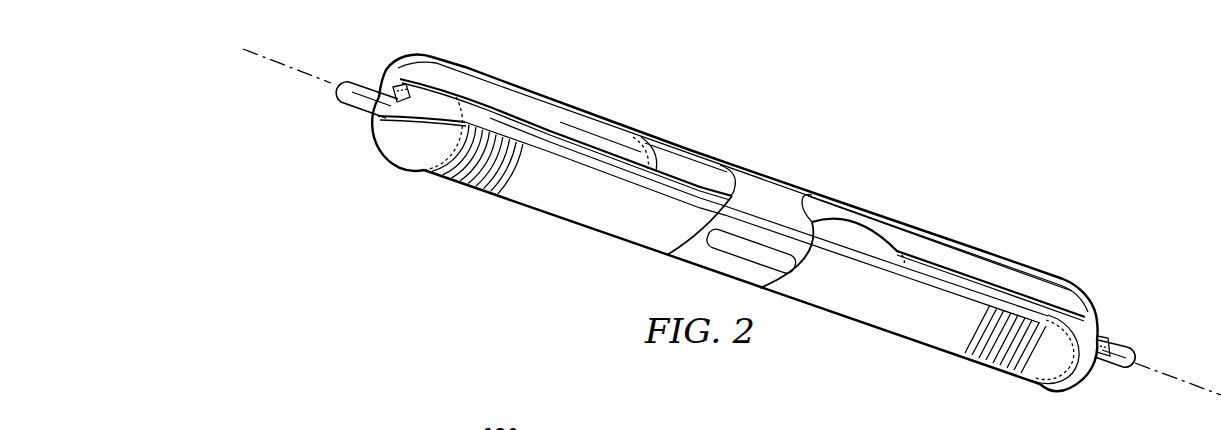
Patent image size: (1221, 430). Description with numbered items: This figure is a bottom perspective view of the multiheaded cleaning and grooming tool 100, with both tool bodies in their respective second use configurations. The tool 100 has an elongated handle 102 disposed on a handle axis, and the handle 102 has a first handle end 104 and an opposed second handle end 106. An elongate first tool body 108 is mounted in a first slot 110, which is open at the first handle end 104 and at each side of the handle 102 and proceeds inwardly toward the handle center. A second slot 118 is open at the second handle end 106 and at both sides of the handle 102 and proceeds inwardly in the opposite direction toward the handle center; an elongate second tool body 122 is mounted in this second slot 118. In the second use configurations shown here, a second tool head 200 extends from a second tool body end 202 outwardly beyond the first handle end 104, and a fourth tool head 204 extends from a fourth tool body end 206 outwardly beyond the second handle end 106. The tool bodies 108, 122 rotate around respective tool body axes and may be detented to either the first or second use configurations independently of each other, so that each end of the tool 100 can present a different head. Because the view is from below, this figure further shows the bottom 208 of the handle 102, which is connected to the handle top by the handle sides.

The multiheaded cleaning and grooming tool 100 is at (803, 124).
The elongated handle 102 is at (535, 86).
The first handle end 104 is at (398, 143).
The second handle end 106 is at (1080, 373).
The first tool body 108 is at (573, 120).
The first slot 110 is at (660, 158).
The second slot 118 is at (845, 222).
The second tool body 122 is at (985, 268).
The second tool head 200 is at (355, 105).
The second tool body end 202 is at (410, 60).
The fourth tool head 204 is at (1140, 351).
The fourth tool body end 206 is at (1101, 330).
The bottom of the handle 208 is at (560, 207).